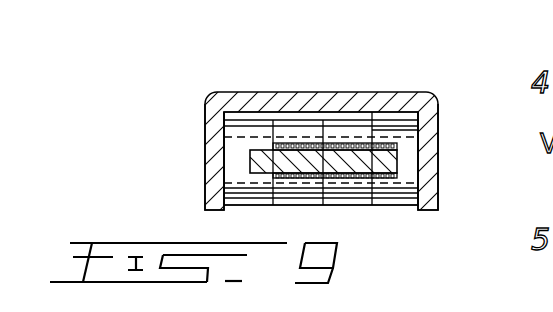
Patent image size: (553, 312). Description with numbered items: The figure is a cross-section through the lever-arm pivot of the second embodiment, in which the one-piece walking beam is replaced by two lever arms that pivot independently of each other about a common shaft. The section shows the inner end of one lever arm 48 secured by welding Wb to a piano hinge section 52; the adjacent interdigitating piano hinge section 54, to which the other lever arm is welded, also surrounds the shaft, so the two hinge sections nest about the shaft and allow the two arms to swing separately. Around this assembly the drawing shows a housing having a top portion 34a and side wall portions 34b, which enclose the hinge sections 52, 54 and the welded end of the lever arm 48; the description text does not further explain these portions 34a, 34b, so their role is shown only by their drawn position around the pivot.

The housing top wall 34a is at (322, 106).
The housing side walls 34b is at (207, 117).
The lever arm 48 is at (385, 160).
The piano hinge section 52 is at (287, 121).
The piano hinge section 54 is at (234, 119).
The welding Wb is at (376, 182).